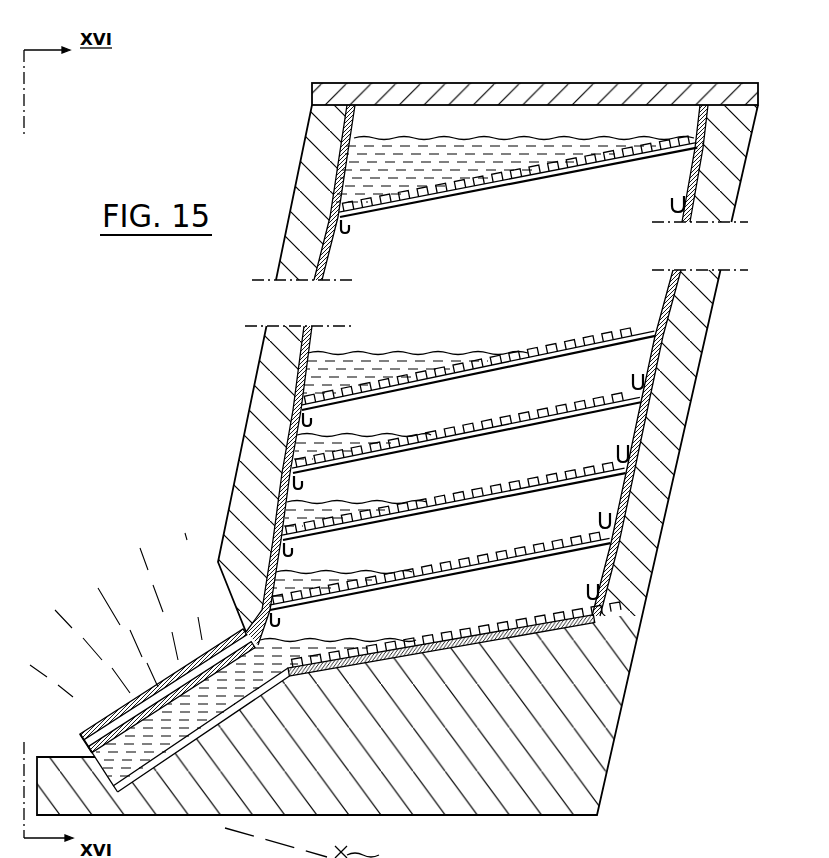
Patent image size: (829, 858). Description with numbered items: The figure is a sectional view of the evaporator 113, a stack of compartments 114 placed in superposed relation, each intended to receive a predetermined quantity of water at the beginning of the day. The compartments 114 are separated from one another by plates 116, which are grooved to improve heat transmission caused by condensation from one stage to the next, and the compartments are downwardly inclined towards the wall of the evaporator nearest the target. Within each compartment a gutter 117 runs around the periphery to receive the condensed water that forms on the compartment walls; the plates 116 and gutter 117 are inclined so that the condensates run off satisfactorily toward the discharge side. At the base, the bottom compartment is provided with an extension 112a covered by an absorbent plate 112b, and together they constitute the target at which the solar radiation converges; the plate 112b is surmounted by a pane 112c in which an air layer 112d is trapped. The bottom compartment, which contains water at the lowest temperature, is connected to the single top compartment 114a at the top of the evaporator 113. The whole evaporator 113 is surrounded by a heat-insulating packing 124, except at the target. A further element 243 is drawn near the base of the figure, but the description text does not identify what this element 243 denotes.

The left side wall 113 is at (244, 406).
The right side wall 124 is at (675, 415).
The perforated trays 116 is at (522, 188).
The tray support hooks 117 is at (350, 229).
The stage compartments 114 is at (550, 394).
The top liquid stage 114a is at (443, 137).
The inlet trough bottom plate 112a is at (233, 700).
The inlet trough upper plates 112b is at (224, 639).
The inlet trough end wall 112c is at (102, 710).
The inlet trough end 112d is at (83, 731).
The feed line 243 is at (325, 843).